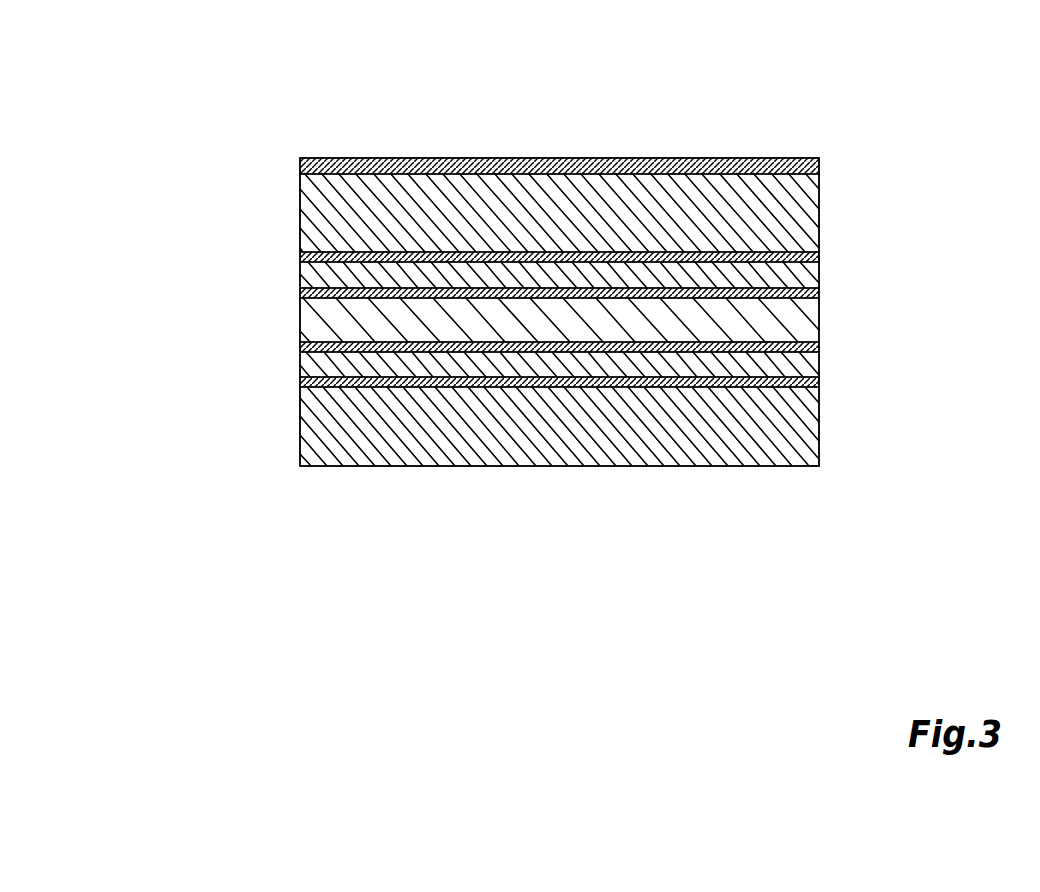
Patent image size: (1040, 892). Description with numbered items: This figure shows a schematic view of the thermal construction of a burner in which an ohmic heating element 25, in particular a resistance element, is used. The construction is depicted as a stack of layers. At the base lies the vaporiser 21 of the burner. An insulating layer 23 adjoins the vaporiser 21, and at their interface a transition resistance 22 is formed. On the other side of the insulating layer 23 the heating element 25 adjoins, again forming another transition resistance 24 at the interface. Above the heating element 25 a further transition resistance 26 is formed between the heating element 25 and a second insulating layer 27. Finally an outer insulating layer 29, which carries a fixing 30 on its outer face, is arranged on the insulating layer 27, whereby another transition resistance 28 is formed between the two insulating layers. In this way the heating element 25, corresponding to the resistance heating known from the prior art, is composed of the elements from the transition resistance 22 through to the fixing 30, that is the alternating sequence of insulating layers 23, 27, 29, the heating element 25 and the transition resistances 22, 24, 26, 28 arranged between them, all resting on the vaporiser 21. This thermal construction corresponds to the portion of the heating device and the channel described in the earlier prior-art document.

The vaporiser 21 is at (540, 433).
The transition resistance 22 is at (808, 382).
The insulating layer 23 is at (347, 365).
The transition resistance 24 is at (808, 346).
The ohmic heating element 25 is at (358, 322).
The transition resistance 26 is at (808, 292).
The insulating layer 27 is at (327, 277).
The transition resistance 28 is at (808, 255).
The outer insulating layer 29 is at (328, 203).
The fixing 30 is at (662, 170).